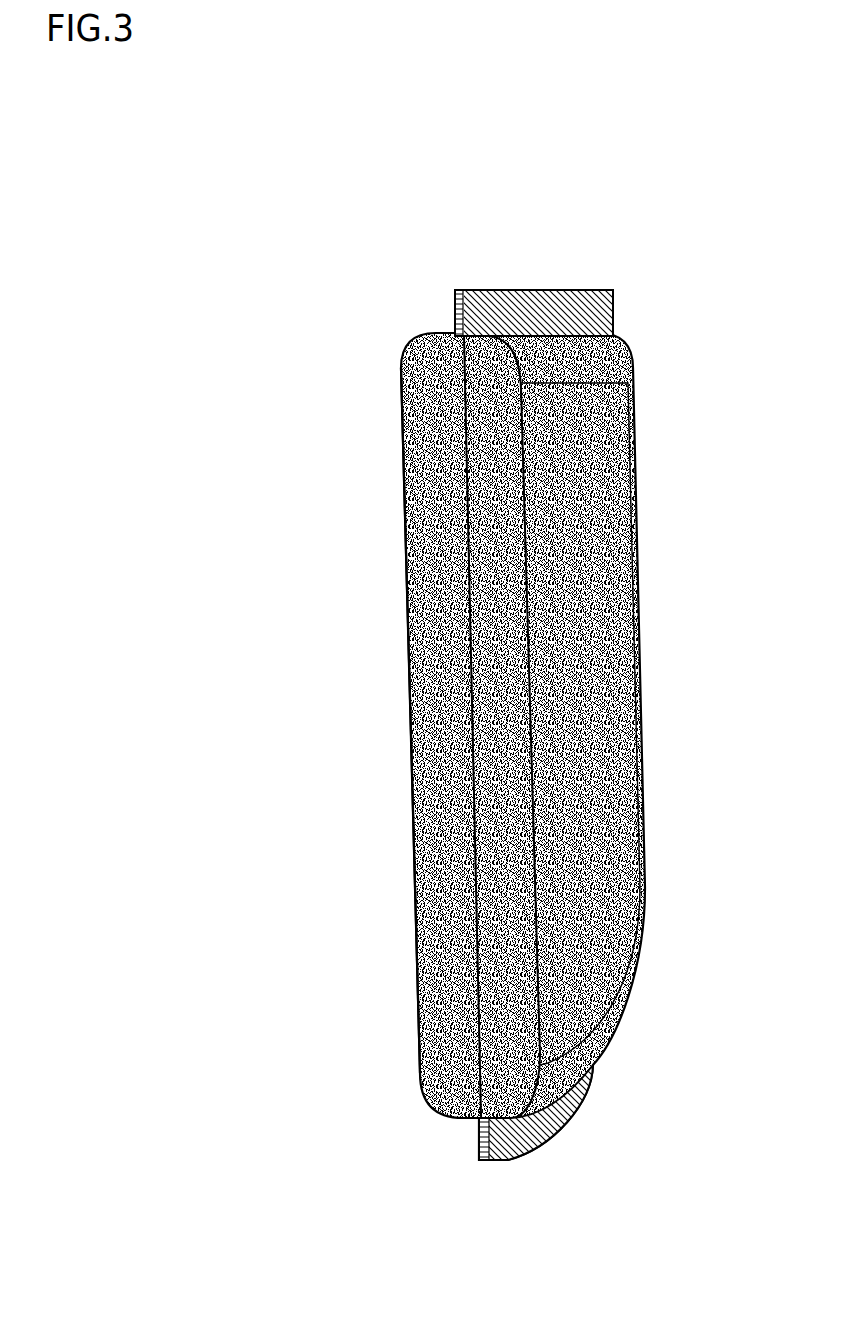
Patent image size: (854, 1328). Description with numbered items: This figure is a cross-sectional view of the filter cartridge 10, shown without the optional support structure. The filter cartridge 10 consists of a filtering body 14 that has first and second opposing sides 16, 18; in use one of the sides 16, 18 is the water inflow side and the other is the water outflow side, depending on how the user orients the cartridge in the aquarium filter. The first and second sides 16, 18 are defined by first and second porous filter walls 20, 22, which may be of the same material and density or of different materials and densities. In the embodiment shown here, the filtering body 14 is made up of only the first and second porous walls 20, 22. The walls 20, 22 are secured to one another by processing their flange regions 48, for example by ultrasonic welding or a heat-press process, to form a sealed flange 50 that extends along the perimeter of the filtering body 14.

The filter cartridge 10 is at (399, 236).
The filtering body 14 is at (355, 415).
The first side 16 is at (398, 525).
The second side 18 is at (580, 533).
The first porous filter wall 20 is at (405, 725).
The second porous filter wall 22 is at (595, 718).
The flange region 48 is at (500, 297).
The sealed flange 50 is at (590, 300).